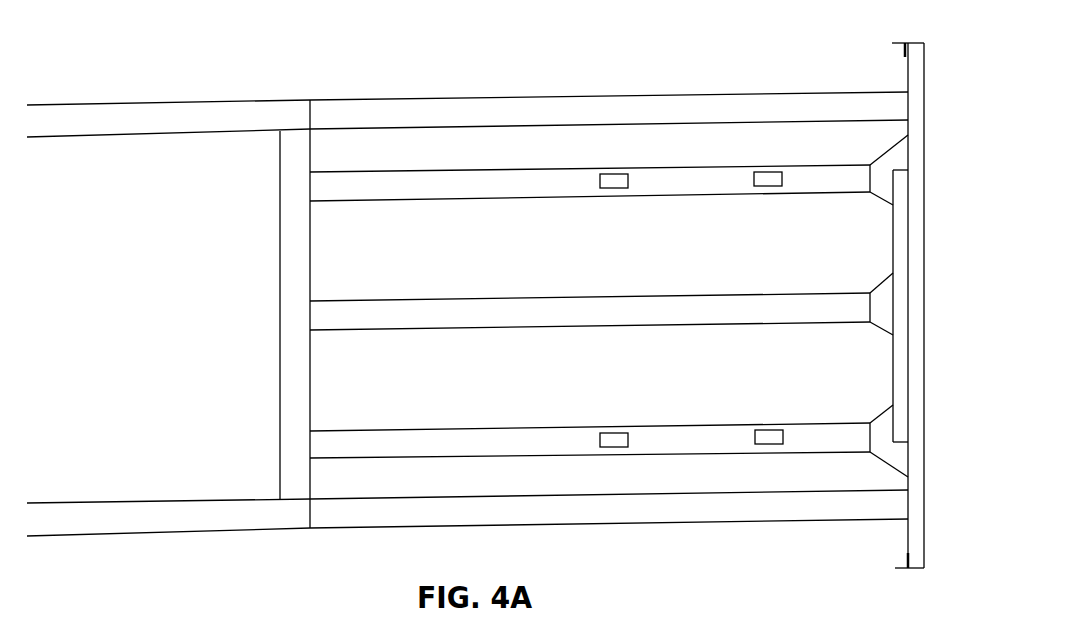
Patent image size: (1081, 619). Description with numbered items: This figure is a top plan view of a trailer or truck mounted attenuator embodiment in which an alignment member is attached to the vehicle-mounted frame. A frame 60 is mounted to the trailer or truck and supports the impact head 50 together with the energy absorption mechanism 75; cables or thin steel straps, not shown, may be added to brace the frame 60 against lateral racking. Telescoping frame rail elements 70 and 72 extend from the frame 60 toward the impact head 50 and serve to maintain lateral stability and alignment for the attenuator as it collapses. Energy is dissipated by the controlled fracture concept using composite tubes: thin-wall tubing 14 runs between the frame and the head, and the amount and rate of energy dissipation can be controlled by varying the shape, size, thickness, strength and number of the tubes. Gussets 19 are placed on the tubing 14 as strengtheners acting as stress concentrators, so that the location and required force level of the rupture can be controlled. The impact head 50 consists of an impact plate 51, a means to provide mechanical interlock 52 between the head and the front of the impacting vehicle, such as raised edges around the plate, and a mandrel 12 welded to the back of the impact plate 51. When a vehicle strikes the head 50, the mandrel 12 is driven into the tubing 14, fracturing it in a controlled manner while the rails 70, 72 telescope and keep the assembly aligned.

The mandrel 12 is at (834, 262).
The thin-wall tubing 14 is at (590, 124).
The gussets 19 is at (691, 309).
The impact head 50 is at (933, 305).
The impact plate 51 is at (859, 306).
The mechanical interlock means 52 is at (953, 305).
The frame 60 is at (202, 315).
The telescoping frame rail element 70 is at (467, 291).
The telescoping frame rail element 72 is at (467, 92).
The energy absorption mechanism 75 is at (590, 375).